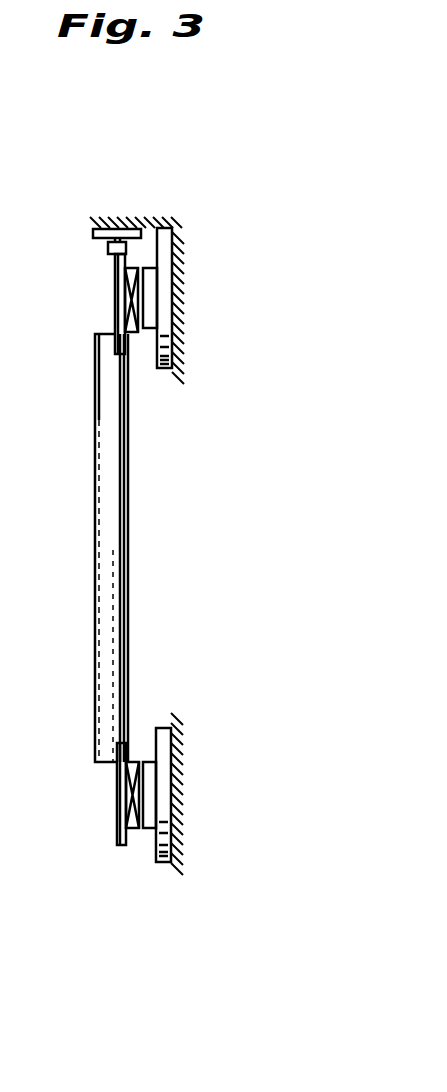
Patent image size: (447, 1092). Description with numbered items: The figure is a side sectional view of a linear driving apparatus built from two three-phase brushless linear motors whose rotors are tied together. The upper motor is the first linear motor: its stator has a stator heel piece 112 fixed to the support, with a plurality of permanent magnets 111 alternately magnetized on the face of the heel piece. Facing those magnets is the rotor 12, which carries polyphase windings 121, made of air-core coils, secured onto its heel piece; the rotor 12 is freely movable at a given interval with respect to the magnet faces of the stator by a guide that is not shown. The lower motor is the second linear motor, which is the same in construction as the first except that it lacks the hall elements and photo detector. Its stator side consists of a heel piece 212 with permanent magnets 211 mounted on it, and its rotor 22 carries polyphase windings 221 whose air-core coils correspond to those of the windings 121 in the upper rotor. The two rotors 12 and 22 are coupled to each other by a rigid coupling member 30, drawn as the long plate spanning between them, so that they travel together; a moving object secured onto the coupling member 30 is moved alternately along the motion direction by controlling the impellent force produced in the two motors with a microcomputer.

The rotor 12 is at (117, 308).
The polyphase windings 121 is at (128, 333).
The permanent magnets 111 is at (152, 265).
The stator heel piece 112 is at (163, 330).
The coupling member 30 is at (125, 513).
The rotor 22 is at (117, 817).
The polyphase windings 221 is at (138, 757).
The lower coil 211 is at (148, 807).
The lower support wall 212 is at (160, 733).